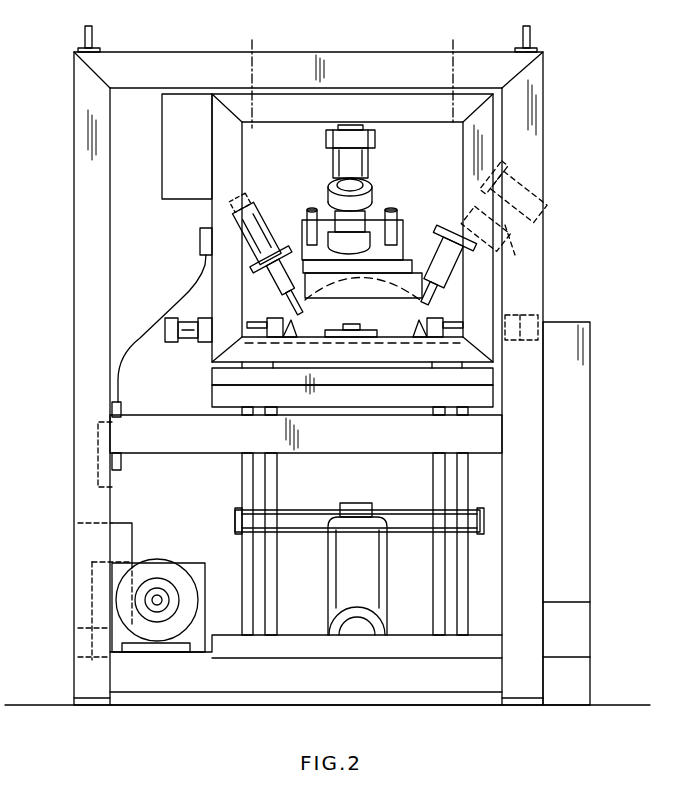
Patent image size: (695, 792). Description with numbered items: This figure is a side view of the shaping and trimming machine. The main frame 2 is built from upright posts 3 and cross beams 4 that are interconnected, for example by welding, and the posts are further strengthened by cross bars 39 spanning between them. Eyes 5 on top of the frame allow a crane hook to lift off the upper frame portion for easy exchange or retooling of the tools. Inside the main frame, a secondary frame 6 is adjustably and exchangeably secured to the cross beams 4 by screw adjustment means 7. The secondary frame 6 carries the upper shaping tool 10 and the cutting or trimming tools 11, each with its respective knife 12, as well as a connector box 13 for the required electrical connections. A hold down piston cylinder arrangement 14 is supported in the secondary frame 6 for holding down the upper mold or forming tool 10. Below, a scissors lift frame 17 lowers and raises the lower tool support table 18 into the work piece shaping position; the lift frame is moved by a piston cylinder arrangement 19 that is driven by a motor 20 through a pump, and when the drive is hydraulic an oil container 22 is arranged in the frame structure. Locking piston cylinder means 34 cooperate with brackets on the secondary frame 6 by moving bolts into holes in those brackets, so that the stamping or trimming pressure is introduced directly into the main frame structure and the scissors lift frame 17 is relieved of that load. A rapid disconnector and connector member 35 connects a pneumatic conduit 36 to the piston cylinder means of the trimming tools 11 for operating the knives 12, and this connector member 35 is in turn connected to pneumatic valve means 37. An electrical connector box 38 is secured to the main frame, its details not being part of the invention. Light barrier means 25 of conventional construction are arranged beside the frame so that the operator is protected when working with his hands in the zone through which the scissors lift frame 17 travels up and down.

The main frame 2 is at (120, 126).
The upright posts 3 is at (82, 176).
The cross beams 4 is at (352, 52).
The eyes 5 is at (92, 36).
The secondary frame 6 is at (470, 140).
The screw adjustment means 7 is at (252, 40).
The upper shaping tool 10 is at (407, 277).
The cutting or trimming tools 11 is at (258, 230).
The knife 12 is at (299, 312).
The connector box 13 is at (199, 176).
The hold down piston cylinder arrangement 14 is at (333, 165).
The scissors lift frame 17 is at (253, 470).
The lower tool support table 18 is at (212, 392).
The piston cylinder arrangement 19 is at (366, 572).
The motor 20 is at (157, 563).
The oil container 22 is at (205, 600).
The light barrier means 25 is at (585, 505).
The locking piston cylinder means 34 is at (190, 342).
The rapid disconnector and connector member 35 is at (121, 408).
The pneumatic conduit 36 is at (132, 350).
The pneumatic valve means 37 is at (98, 462).
The electrical connector box 38 is at (120, 535).
The cross bars 39 is at (205, 447).